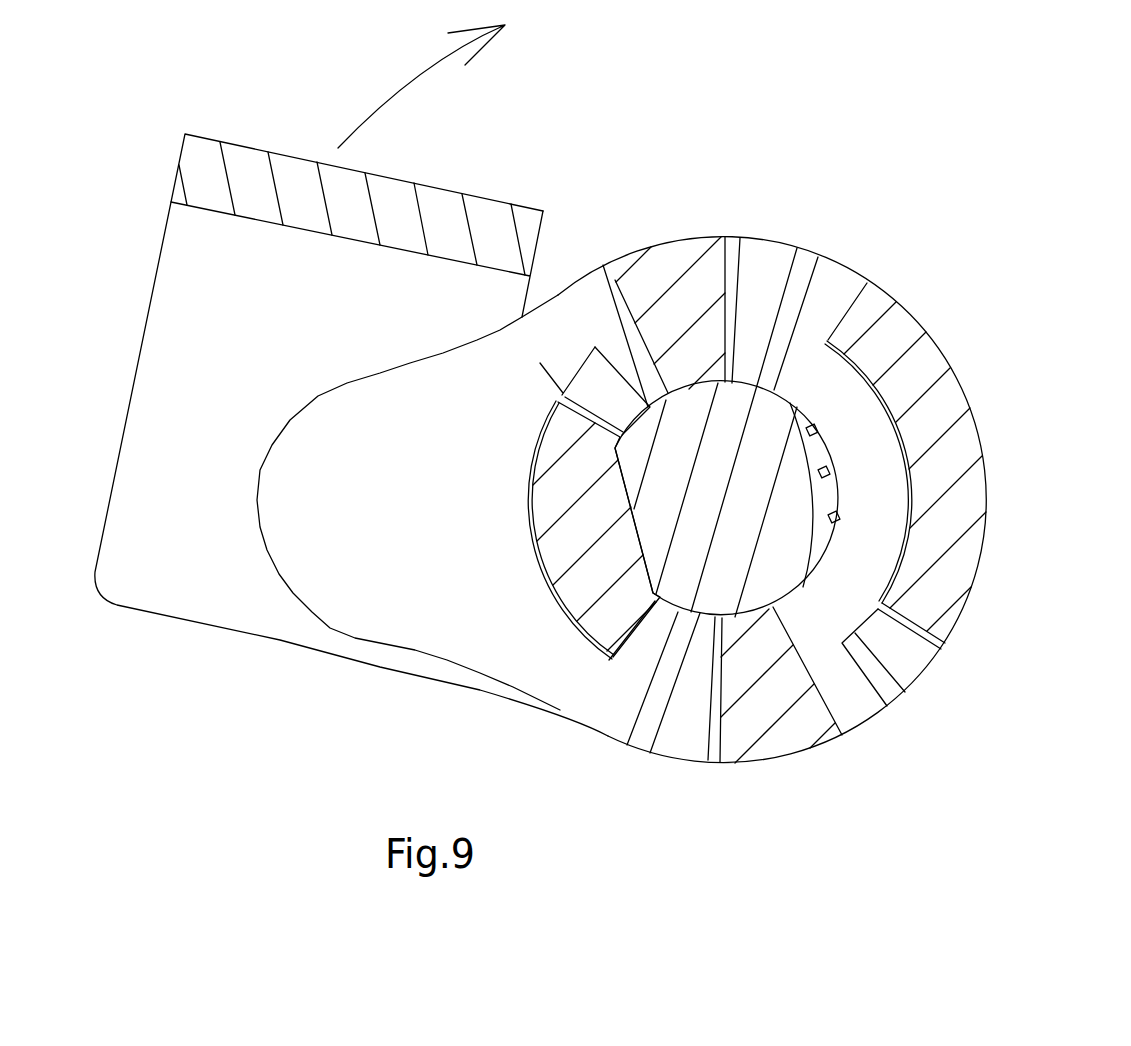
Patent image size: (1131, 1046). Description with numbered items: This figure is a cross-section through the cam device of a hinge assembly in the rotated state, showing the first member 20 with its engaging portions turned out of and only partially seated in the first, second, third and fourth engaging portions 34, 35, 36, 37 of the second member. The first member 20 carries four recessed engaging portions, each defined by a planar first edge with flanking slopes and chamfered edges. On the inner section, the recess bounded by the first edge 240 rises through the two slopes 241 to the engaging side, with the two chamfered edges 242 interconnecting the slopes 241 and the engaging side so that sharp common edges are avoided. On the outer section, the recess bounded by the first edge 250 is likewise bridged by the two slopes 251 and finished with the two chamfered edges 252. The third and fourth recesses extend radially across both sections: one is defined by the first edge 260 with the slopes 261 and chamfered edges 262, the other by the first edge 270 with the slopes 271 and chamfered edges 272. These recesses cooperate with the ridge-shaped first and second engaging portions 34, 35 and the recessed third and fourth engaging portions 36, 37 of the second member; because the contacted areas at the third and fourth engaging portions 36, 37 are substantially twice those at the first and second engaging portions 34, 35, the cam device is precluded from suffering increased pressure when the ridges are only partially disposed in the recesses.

The first member 20 is at (307, 582).
The first engaging portion 34 is at (517, 607).
The second engaging portion 35 is at (1020, 504).
The third engaging portion 36 is at (680, 207).
The fourth engaging portion 37 is at (811, 789).
The first edge 240 is at (560, 392).
The slopes 241 is at (593, 393).
The chamfered edges 242 is at (625, 387).
The first edge 250 is at (937, 632).
The slopes 251 is at (923, 657).
The chamfered edges 252 is at (892, 685).
The first edge 260 is at (732, 257).
The slopes 261 is at (768, 262).
The chamfered edges 262 is at (802, 263).
The first edge 270 is at (710, 752).
The slopes 271 is at (688, 742).
The chamfered edges 272 is at (640, 733).